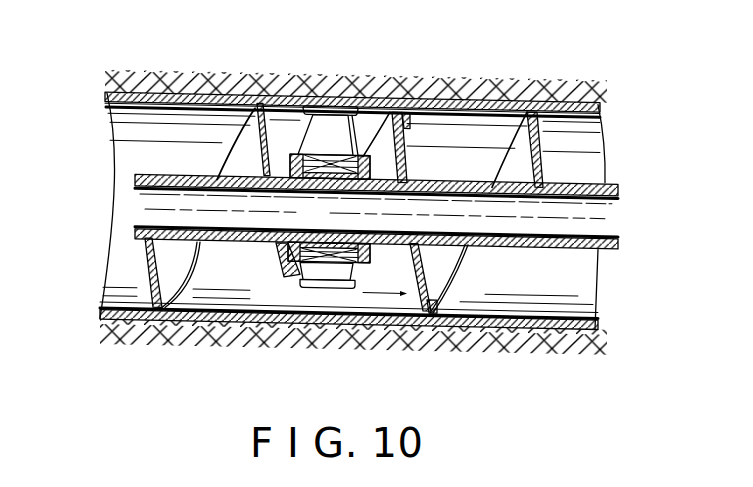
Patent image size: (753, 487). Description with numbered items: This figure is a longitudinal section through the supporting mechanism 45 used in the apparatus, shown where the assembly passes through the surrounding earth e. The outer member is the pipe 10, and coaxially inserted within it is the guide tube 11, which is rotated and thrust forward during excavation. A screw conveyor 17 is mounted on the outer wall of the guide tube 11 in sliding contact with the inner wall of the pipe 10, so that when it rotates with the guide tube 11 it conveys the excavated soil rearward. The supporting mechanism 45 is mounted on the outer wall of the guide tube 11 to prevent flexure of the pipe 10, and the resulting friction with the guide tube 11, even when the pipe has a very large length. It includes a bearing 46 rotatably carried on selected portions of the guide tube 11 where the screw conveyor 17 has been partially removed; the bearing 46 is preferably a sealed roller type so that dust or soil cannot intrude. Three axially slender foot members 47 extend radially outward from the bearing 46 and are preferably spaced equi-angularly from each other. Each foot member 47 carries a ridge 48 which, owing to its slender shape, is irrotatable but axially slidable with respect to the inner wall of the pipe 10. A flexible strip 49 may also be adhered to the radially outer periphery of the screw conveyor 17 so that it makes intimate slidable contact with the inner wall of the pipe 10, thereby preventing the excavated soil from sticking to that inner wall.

The pipe 10 is at (437, 94).
The guide tube 11 is at (610, 171).
The screw conveyor 17 is at (539, 147).
The supporting mechanism 45 is at (367, 130).
The bearing 46 is at (320, 169).
The foot member 47 is at (313, 130).
The ridge 48 is at (318, 99).
The flexible strip 49 is at (408, 118).
The earth e is at (543, 82).